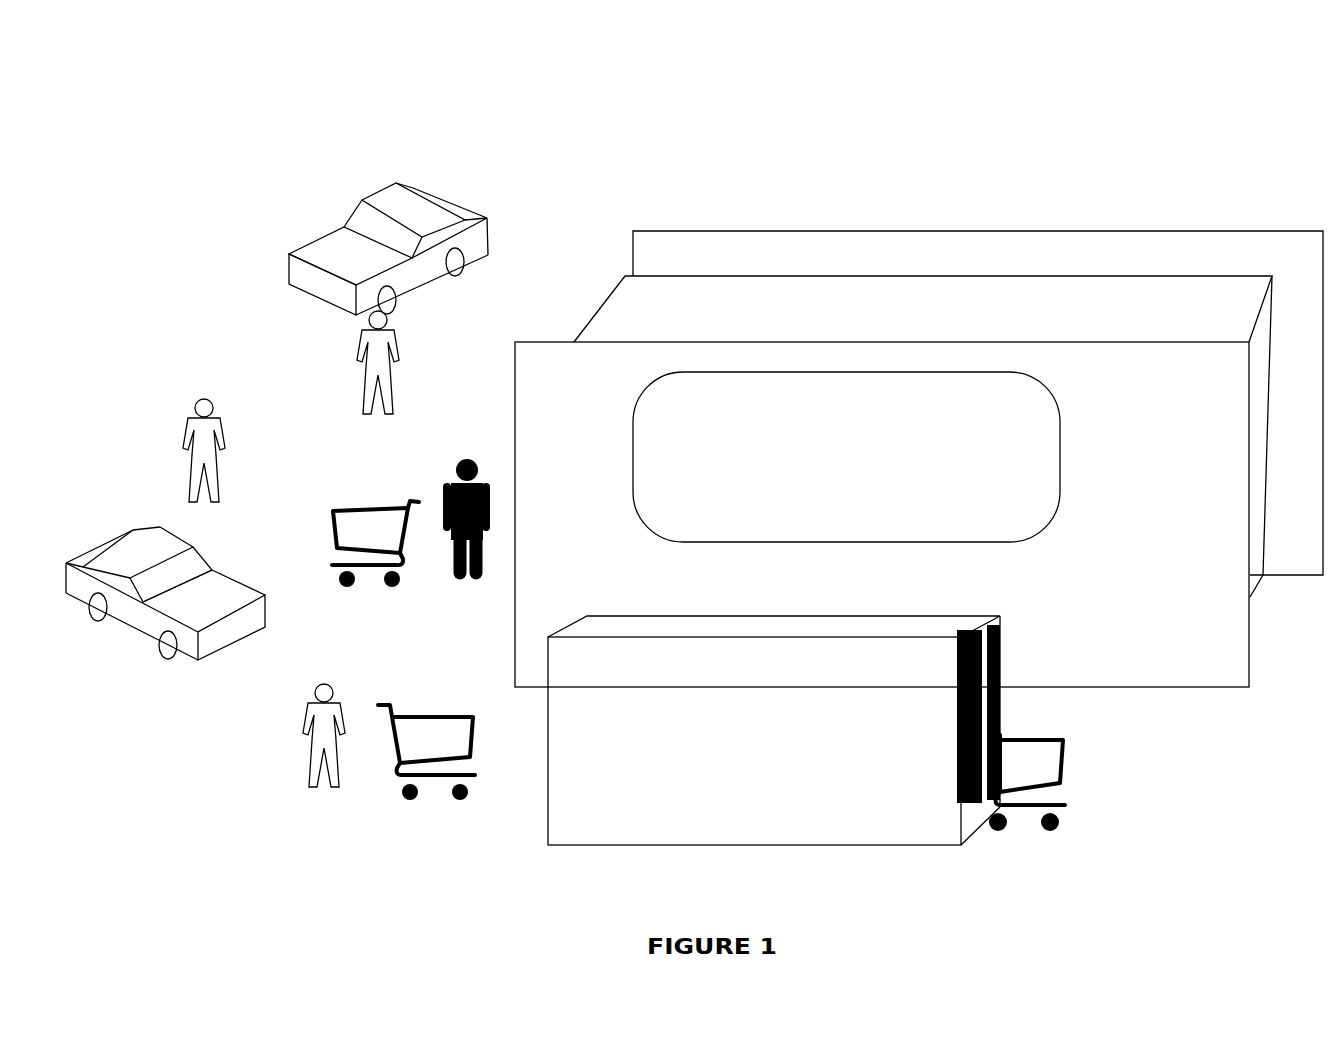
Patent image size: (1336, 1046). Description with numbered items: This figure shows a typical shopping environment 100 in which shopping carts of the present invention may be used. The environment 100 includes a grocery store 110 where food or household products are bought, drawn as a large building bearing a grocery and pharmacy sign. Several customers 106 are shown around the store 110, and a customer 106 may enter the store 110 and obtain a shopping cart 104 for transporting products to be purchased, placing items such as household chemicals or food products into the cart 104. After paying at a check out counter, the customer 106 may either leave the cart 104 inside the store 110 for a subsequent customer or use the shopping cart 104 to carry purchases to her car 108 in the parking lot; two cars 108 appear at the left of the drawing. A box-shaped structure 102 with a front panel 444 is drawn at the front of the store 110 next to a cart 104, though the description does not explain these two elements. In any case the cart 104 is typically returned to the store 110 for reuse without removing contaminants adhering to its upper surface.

The shopping environment 100 is at (710, 112).
The checkout station 102 is at (925, 612).
The shopping cart 104 is at (366, 500).
The customer 106 is at (220, 405).
The car 108 is at (470, 193).
The grocery store 110 is at (1078, 220).
The checkout station front panel 444 is at (708, 790).